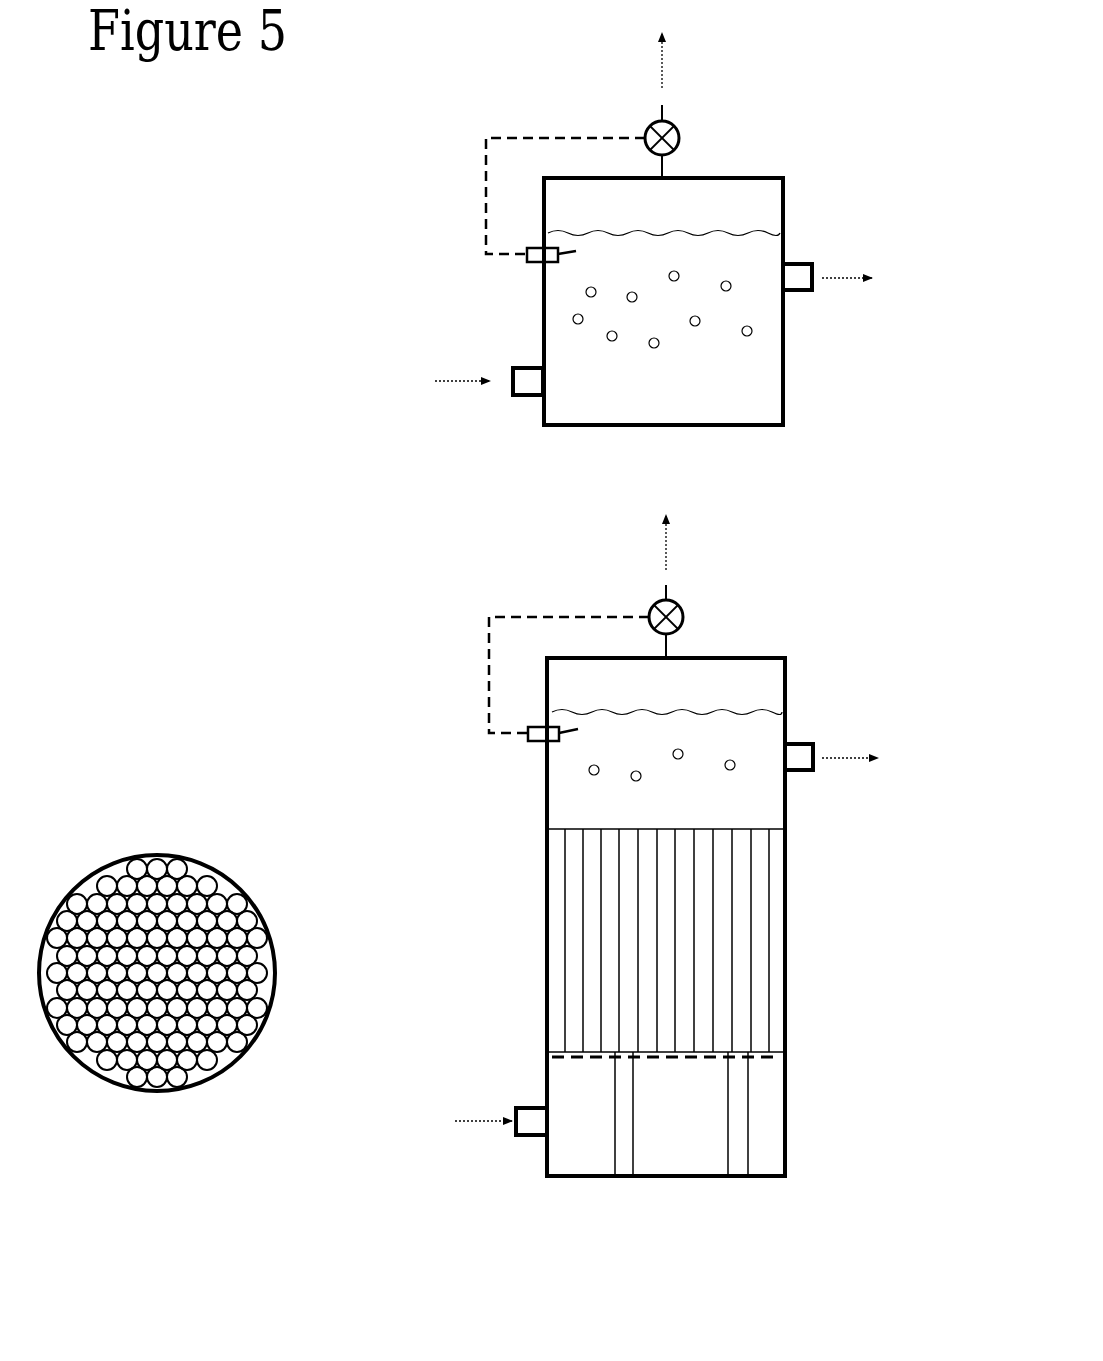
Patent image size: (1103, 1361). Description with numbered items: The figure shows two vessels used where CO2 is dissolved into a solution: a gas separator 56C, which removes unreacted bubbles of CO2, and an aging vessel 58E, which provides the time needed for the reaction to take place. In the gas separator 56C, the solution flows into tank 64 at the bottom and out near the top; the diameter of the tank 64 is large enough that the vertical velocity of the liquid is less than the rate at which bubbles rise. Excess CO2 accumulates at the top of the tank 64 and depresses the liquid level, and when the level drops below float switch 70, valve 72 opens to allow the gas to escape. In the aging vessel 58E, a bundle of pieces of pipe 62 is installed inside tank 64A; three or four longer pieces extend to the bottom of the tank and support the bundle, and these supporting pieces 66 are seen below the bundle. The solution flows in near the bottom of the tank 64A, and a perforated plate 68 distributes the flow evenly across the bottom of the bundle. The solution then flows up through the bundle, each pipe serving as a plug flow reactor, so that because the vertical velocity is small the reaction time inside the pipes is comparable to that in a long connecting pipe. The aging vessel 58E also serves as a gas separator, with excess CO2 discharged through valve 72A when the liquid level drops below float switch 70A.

The gas separator 56C is at (510, 229).
The aging vessel 58E is at (498, 845).
The bundle of pieces of pipe 62 is at (752, 862).
The tank 64 is at (785, 363).
The tank 64A is at (787, 921).
The support legs 66 is at (738, 1112).
The perforated plate 68 is at (578, 1056).
The float switch 70 is at (527, 264).
The float switch 70A is at (545, 742).
The valve 72 is at (679, 132).
The valve 72A is at (683, 612).